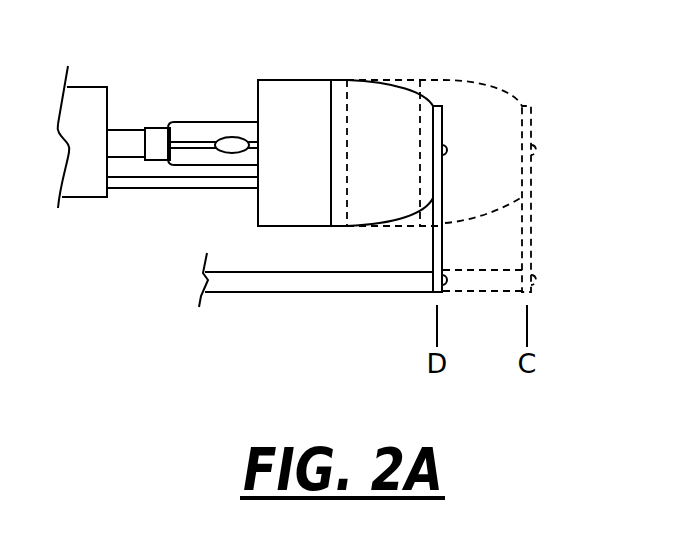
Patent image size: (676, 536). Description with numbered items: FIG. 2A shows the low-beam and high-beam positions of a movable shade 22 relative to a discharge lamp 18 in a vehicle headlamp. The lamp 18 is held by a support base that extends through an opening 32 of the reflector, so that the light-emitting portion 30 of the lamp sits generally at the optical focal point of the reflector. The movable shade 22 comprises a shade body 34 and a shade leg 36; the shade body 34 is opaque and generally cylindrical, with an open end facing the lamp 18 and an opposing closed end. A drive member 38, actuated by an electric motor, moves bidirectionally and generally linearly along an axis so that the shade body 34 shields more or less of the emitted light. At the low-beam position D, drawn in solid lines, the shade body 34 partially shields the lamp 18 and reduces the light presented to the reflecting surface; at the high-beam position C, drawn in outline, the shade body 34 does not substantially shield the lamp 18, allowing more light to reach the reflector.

The discharge lamp 18 is at (193, 121).
The movable shade 22 is at (437, 105).
The light-emitting portion 30 is at (238, 137).
The opening 32 is at (108, 112).
The shade body 34 is at (322, 80).
The shade leg 36 is at (433, 245).
The drive member 38 is at (328, 292).